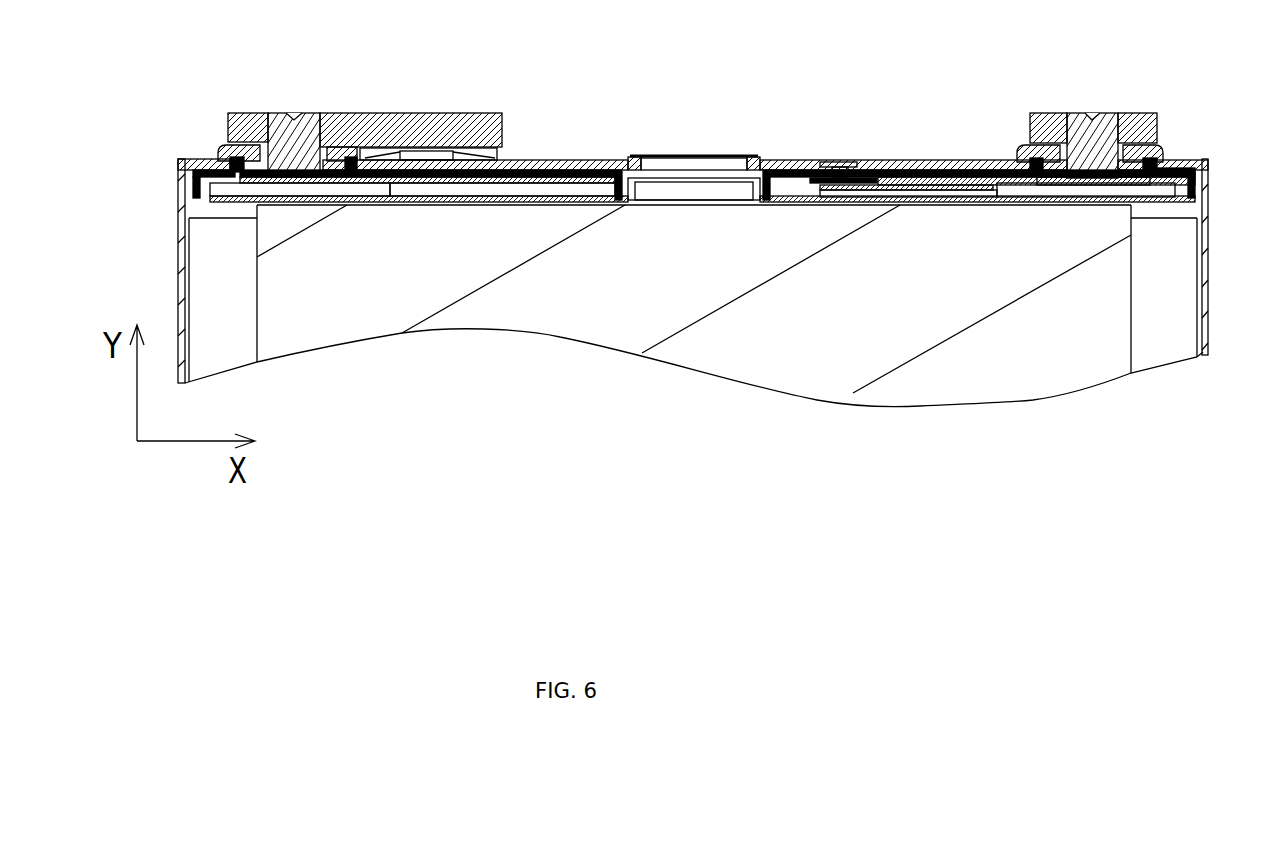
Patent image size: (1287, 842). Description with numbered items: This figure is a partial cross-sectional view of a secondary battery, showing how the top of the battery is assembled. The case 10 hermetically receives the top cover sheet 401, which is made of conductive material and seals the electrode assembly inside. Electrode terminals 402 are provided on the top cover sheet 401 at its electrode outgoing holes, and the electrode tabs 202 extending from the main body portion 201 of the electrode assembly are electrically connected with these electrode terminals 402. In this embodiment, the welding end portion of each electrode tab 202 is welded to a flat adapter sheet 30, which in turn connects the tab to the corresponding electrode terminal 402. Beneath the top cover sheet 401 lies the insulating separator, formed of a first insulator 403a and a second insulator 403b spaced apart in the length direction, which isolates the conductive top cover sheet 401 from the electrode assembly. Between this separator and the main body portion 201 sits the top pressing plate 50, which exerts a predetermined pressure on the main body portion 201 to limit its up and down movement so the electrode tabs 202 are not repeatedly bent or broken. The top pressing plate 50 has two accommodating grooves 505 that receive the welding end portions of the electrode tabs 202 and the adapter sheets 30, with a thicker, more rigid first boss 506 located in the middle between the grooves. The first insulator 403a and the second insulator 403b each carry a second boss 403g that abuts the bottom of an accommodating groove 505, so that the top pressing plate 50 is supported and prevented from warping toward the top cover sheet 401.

The case 10 is at (178, 200).
The adapter sheet 30 is at (305, 203).
The top pressing plate 50 is at (963, 205).
The main body portion 201 is at (633, 317).
The electrode tab 202 is at (548, 170).
The top cover sheet 401 is at (1027, 147).
The electrode terminal 402 is at (300, 113).
The first insulator 403a is at (610, 158).
The second insulator 403b is at (963, 178).
The second boss 403g is at (603, 205).
The accommodating groove 505 is at (212, 148).
The first boss 506 is at (685, 187).